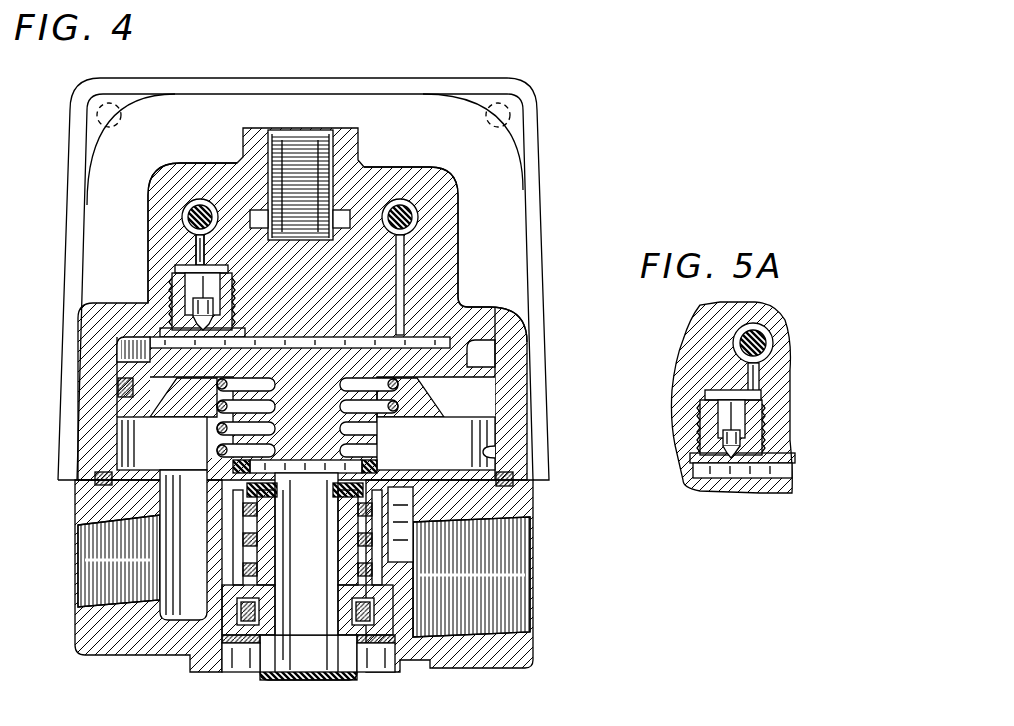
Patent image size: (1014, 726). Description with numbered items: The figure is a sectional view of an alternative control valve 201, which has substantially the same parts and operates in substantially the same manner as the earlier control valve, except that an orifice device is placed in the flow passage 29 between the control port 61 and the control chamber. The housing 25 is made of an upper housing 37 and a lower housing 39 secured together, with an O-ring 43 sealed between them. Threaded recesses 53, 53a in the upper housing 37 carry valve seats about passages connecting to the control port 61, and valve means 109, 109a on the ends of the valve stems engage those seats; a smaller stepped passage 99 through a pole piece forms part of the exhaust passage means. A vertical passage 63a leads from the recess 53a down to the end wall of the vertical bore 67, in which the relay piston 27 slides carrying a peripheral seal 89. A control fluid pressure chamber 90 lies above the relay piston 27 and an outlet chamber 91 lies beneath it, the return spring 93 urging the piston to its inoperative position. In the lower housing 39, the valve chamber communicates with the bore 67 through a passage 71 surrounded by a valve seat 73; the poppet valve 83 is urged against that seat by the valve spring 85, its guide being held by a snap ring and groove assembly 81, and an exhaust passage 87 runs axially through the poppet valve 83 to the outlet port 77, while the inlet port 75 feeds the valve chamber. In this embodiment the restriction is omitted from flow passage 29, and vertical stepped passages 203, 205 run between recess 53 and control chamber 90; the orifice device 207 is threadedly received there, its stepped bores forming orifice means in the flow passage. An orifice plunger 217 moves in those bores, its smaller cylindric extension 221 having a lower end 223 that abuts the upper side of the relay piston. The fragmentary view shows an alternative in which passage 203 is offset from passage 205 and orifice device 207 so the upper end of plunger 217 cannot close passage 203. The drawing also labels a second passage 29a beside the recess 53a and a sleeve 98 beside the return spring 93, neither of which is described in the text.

In FIG. 4, the control valve 201 is at (567, 184).
In FIG. 4, the housing 25 is at (553, 312).
In FIG. 4, the control port 61 is at (296, 134).
In FIG. 4, the threaded recess 53 is at (180, 172).
In FIG. 4, the threaded recess 53a is at (418, 192).
In FIG. 4, the flow passage 29 is at (198, 200).
In FIG. 4, the screw 29a is at (352, 212).
In FIG. 4, the valve means 109 is at (190, 215).
In FIG. 4, the valve means 109a is at (422, 217).
In FIG. 4, the vertical stepped passage 203 is at (193, 251).
In FIG. 5A, the vertical stepped passage 203 is at (763, 370).
In FIG. 4, the vertical stepped passage 205 is at (178, 271).
In FIG. 5A, the vertical stepped passage 205 is at (765, 443).
In FIG. 4, the orifice device 207 is at (170, 294).
In FIG. 5A, the orifice device 207 is at (767, 412).
In FIG. 4, the orifice plunger 217 is at (205, 310).
In FIG. 5A, the orifice plunger 217 is at (757, 404).
In FIG. 4, the vertical passage 63a is at (410, 283).
In FIG. 4, the control fluid pressure chamber 90 is at (456, 305).
In FIG. 4, the upper housing 37 is at (520, 342).
In FIG. 4, the smaller cylindric extension 221 is at (200, 343).
In FIG. 4, the lower end 223 is at (125, 385).
In FIG. 4, the peripheral seal 89 is at (495, 388).
In FIG. 4, the relay piston 27 is at (462, 393).
In FIG. 4, the return spring 93 is at (392, 435).
In FIG. 4, the sleeve 98 is at (222, 447).
In FIG. 4, the outlet chamber 91 is at (460, 467).
In FIG. 4, the valve seat 73 is at (390, 470).
In FIG. 4, the vertical bore 67 is at (494, 452).
In FIG. 4, the O-ring 43 is at (510, 487).
In FIG. 4, the passage 71 is at (338, 497).
In FIG. 4, the poppet valve 83 is at (268, 537).
In FIG. 4, the valve spring 85 is at (346, 559).
In FIG. 4, the exhaust passage 87 is at (345, 628).
In FIG. 4, the outlet port 77 is at (86, 595).
In FIG. 4, the inlet port 75 is at (510, 623).
In FIG. 4, the lower housing 39 is at (104, 648).
In FIG. 4, the snap ring and groove assembly 81 is at (237, 673).
In FIG. 4, the smaller stepped passage 99 is at (260, 673).